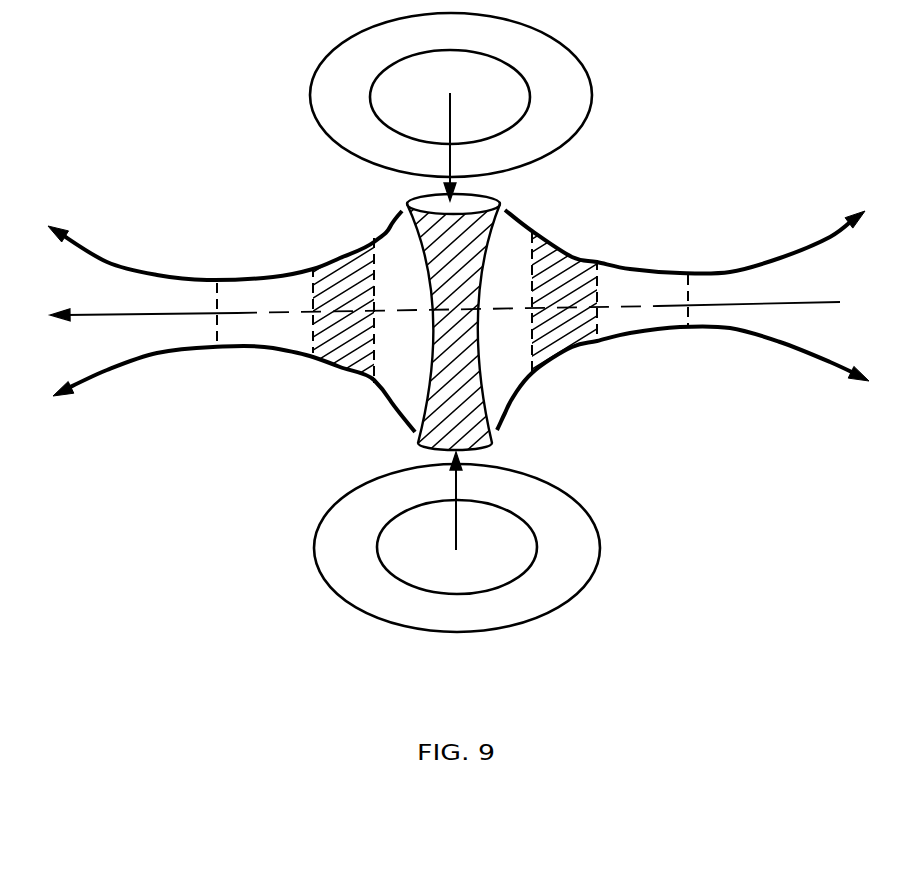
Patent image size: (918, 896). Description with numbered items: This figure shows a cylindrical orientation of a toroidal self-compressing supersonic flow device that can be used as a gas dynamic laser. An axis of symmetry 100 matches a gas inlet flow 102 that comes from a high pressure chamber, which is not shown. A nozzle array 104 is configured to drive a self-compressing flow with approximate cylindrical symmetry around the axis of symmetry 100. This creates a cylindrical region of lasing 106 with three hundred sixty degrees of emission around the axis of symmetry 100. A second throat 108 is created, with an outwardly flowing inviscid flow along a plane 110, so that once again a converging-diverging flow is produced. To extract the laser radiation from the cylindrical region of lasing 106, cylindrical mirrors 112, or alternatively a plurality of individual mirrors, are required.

The axis of symmetry 100 is at (456, 530).
The gas inlet flow 102 is at (515, 103).
The nozzle array 104 is at (486, 428).
The cylindrical region of lasing 106 is at (343, 250).
The second throat 108 is at (217, 283).
The plane 110 is at (70, 312).
The cylindrical mirrors 112 is at (593, 98).